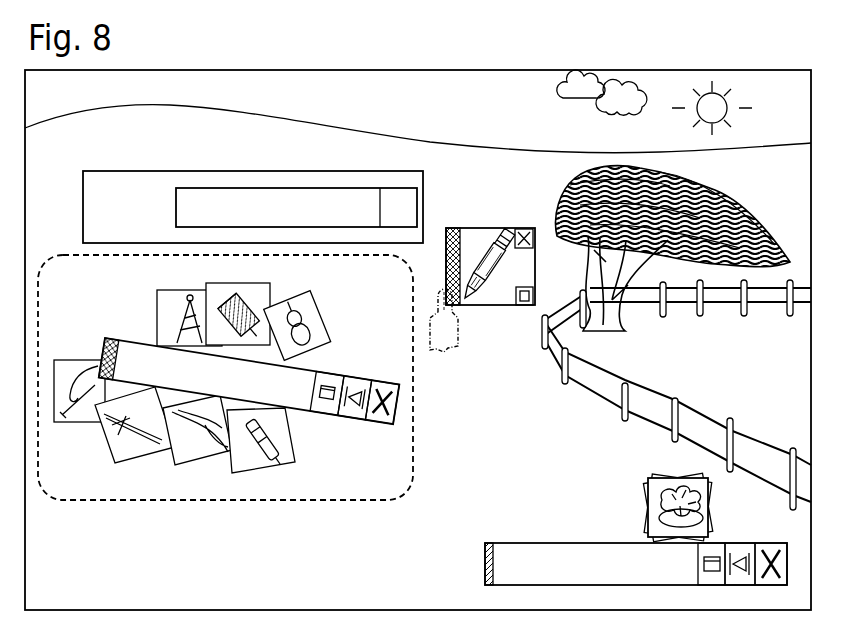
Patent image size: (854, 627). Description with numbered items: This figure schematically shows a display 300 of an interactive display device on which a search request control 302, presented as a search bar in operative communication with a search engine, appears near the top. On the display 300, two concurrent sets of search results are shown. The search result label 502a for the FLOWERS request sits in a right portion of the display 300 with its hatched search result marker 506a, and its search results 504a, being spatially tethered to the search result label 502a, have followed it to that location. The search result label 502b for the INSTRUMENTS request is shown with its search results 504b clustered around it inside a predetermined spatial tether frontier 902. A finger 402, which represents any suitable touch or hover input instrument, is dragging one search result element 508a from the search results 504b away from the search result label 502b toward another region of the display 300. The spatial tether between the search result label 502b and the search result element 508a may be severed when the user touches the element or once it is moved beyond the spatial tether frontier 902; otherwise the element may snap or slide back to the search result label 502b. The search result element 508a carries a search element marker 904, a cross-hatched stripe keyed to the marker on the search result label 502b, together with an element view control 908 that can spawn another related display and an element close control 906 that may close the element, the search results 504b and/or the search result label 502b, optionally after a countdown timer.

The display 300 is at (758, 70).
The search request control 302 is at (374, 170).
The finger 402 is at (459, 322).
The search result label 502a is at (599, 544).
The search result label 502b is at (383, 353).
The search results 504a is at (646, 467).
The search results 504b is at (306, 450).
The search result marker 506a is at (485, 572).
The search result element 508a is at (500, 236).
The spatial tether frontier 902 is at (247, 502).
The search element marker 904 is at (452, 230).
The element close control 906 is at (527, 229).
The element view control 908 is at (532, 298).